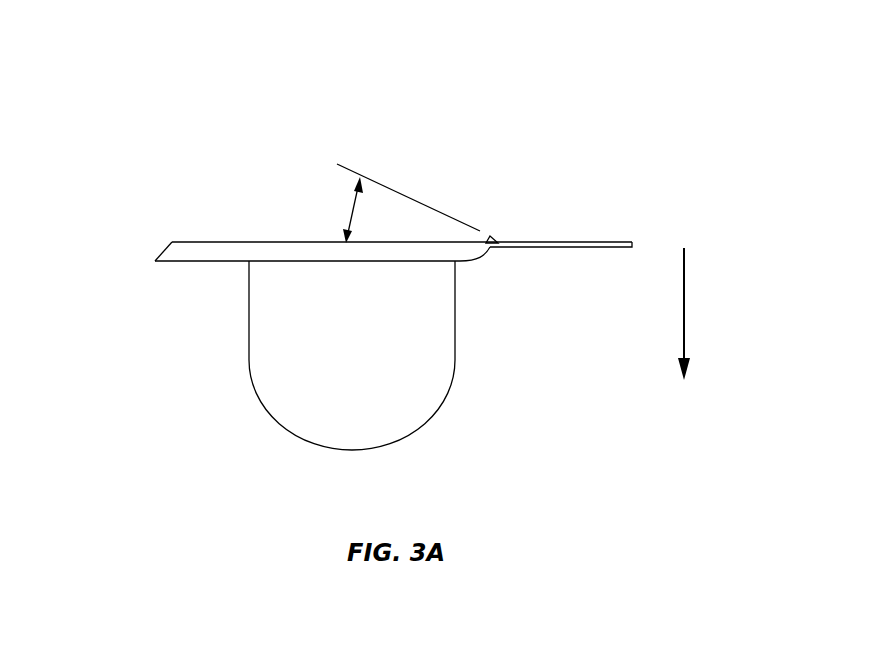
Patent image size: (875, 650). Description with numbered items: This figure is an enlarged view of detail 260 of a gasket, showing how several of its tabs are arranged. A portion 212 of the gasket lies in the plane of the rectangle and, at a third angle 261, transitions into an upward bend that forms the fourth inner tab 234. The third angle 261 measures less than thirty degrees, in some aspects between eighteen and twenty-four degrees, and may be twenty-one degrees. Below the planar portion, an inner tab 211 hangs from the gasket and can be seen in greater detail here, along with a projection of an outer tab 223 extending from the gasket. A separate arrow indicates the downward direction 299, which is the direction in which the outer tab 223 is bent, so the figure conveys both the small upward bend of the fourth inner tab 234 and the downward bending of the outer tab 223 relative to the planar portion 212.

The inner tab 211 is at (278, 423).
The portion of the gasket 212 is at (547, 253).
The outer tab 223 is at (193, 240).
The fourth inner tab 234 is at (497, 230).
The detail 260 is at (298, 115).
The third angle 261 is at (343, 205).
The downward direction 299 is at (690, 305).